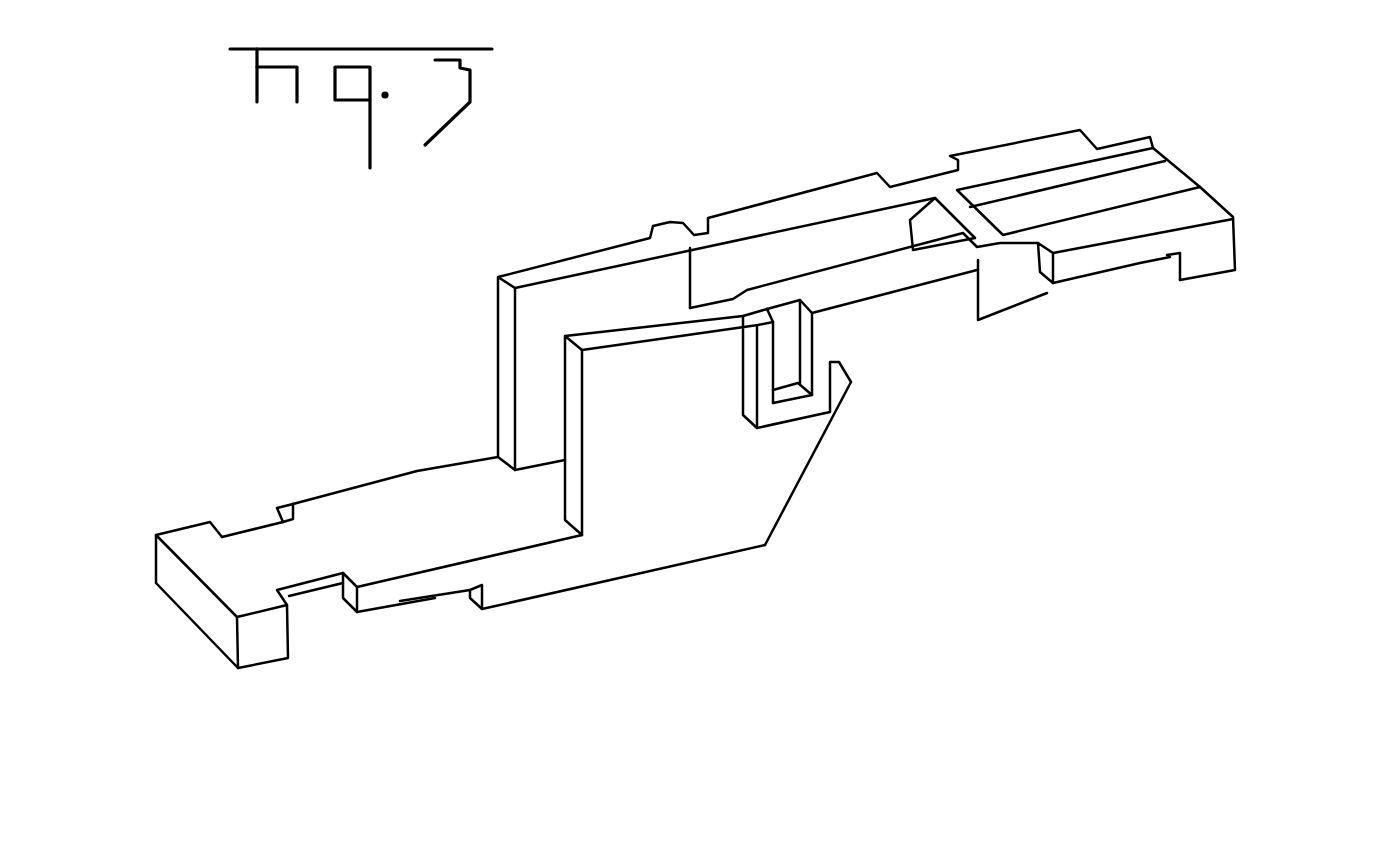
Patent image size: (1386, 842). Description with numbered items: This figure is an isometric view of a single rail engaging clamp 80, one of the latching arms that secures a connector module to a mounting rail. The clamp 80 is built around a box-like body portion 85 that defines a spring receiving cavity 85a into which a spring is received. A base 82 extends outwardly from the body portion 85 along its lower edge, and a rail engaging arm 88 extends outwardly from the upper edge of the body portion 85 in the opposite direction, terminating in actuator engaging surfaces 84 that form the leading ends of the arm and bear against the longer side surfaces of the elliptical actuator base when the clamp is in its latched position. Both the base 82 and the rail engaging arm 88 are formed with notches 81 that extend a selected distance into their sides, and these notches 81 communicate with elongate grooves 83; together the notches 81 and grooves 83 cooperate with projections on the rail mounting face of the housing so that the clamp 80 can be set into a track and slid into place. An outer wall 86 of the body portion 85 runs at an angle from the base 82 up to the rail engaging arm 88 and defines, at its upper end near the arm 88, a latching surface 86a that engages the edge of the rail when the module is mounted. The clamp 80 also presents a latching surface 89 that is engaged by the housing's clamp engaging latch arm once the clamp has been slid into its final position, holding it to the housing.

The rail engaging clamp 80 is at (625, 623).
The notches 81 is at (307, 623).
The base 82 is at (302, 550).
The elongate grooves 83 is at (437, 598).
The actuator engaging surfaces 84 is at (1237, 242).
The body portion 85 is at (700, 505).
The spring receiving cavity 85a is at (728, 277).
The outer wall 86 is at (825, 438).
The latching surface 86a is at (847, 372).
The rail engaging arm 88 is at (1093, 291).
The latching surface 89 is at (910, 255).